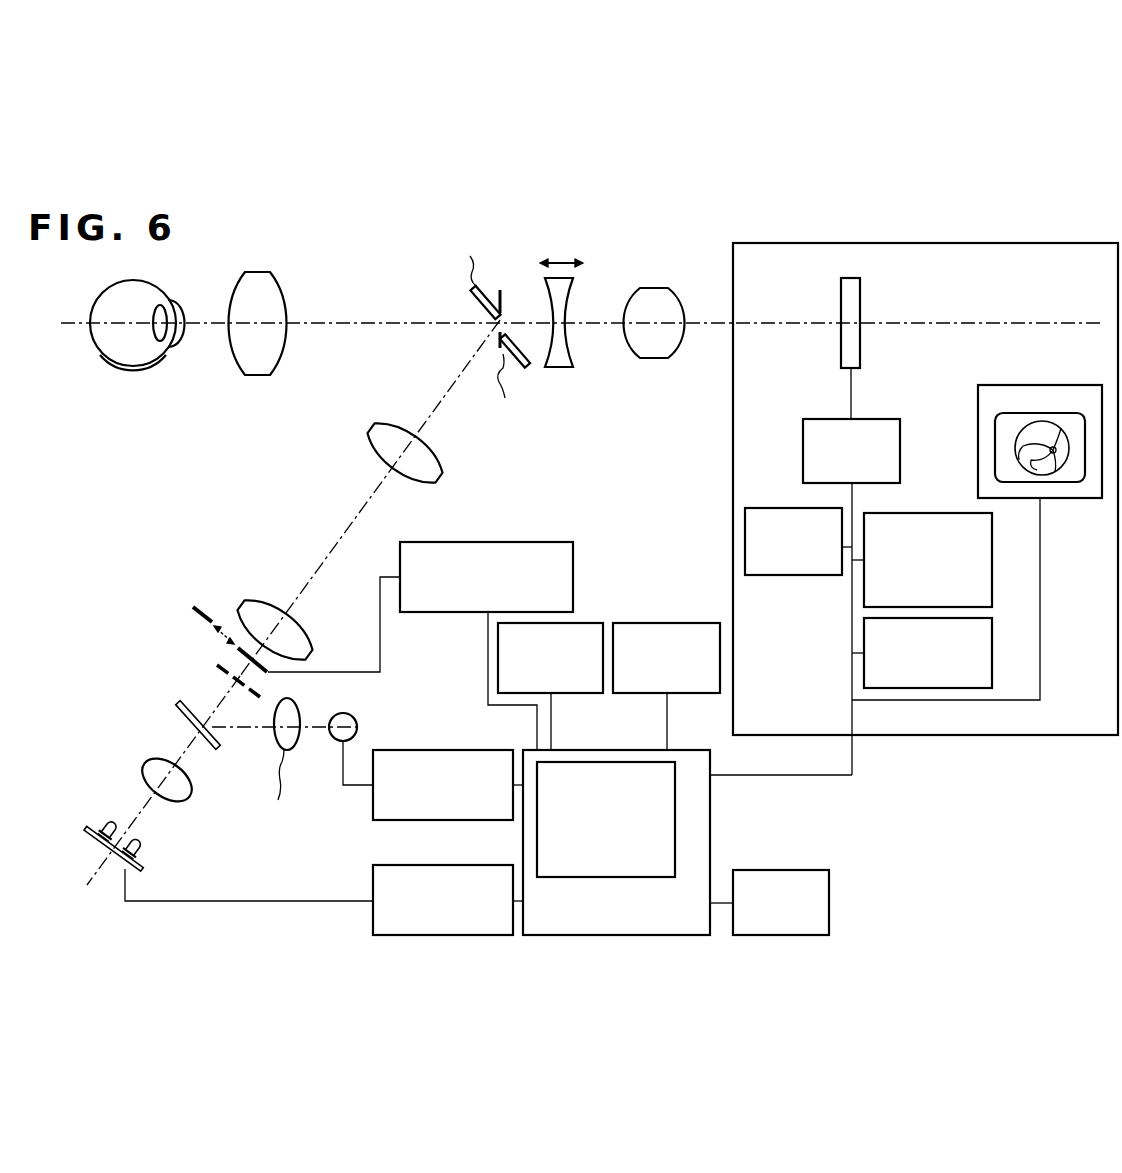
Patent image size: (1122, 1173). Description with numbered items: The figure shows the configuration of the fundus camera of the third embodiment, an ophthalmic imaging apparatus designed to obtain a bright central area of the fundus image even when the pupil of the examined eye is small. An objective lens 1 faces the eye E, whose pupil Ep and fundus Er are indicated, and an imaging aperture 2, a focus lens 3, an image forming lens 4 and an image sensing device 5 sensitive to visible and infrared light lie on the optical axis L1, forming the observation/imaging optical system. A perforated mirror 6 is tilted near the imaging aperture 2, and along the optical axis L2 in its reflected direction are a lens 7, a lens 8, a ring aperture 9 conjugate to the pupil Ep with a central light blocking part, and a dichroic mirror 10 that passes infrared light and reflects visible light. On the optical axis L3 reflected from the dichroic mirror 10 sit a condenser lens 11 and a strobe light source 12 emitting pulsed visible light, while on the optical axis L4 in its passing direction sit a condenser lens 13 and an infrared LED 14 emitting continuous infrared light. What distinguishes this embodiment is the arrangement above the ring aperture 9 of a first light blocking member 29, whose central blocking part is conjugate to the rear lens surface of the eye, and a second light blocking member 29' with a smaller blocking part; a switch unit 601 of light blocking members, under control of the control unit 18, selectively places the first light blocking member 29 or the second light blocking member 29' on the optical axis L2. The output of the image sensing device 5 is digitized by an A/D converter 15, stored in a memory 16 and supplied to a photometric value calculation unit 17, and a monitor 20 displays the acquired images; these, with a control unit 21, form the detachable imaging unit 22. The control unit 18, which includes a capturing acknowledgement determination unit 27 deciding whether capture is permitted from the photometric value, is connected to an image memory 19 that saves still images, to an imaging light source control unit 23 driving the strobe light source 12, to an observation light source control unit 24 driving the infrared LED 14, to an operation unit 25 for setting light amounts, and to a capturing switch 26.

The objective lens 1 is at (257, 378).
The imaging aperture 2 is at (500, 296).
The focus lens 3 is at (574, 290).
The image forming lens 4 is at (652, 290).
The image sensing device 5 is at (862, 296).
The perforated mirror 6 is at (474, 299).
The lens 7 is at (446, 481).
The lens 8 is at (322, 622).
The ring aperture 9 is at (214, 668).
The dichroic mirror 10 is at (164, 706).
The condenser lens 11 is at (274, 726).
The strobe light source 12 is at (339, 741).
The condenser lens 13 is at (186, 788).
The infrared LED 14 is at (140, 868).
The A/D converter 15 is at (817, 417).
The memory 16 is at (760, 506).
The photometric value calculation unit 17 is at (993, 557).
The control unit 18 is at (690, 750).
The image memory 19 is at (806, 870).
The monitor 20 is at (1042, 384).
The control unit of imaging unit 21 is at (993, 642).
The imaging unit 22 is at (1092, 738).
The imaging light source control unit 23 is at (396, 822).
The observation light source control unit 24 is at (490, 864).
The operation unit 25 is at (590, 622).
The capturing switch 26 is at (688, 622).
The capturing acknowledgement determination unit 27 is at (677, 812).
The first light blocking member 29 is at (279, 674).
The second light blocking member 29' is at (193, 602).
The switch unit of light blocking members 601 is at (558, 542).
The eye to be examined E is at (106, 299).
The pupil Ep is at (165, 302).
The fundus Er is at (136, 368).
The optical axis L1 is at (343, 320).
The optical axis L2 is at (444, 376).
The optical axis L3 is at (236, 726).
The optical axis L4 is at (176, 754).